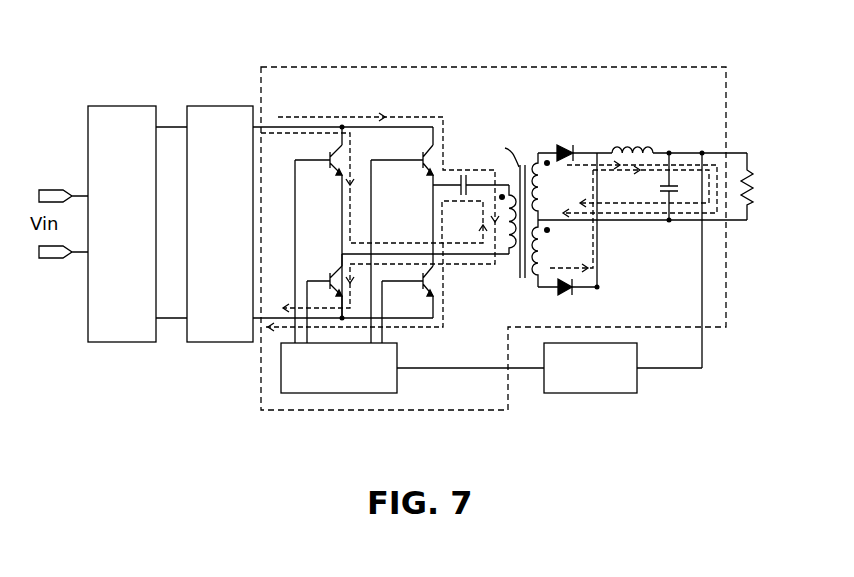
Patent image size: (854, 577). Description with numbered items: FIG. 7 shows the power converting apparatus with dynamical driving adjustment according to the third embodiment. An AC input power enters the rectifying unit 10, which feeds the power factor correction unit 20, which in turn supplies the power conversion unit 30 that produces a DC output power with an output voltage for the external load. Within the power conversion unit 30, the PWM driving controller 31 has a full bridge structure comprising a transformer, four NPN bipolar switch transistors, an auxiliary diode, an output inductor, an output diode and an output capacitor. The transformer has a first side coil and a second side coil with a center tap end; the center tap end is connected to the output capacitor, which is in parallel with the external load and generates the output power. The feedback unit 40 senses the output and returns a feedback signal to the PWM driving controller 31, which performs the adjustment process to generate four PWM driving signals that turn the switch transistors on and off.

The rectifying unit 10 is at (120, 106).
The power factor correction unit 20 is at (220, 106).
The power conversion unit 30 is at (385, 411).
The PWM driving controller 31 is at (338, 394).
The feedback unit 40 is at (592, 394).